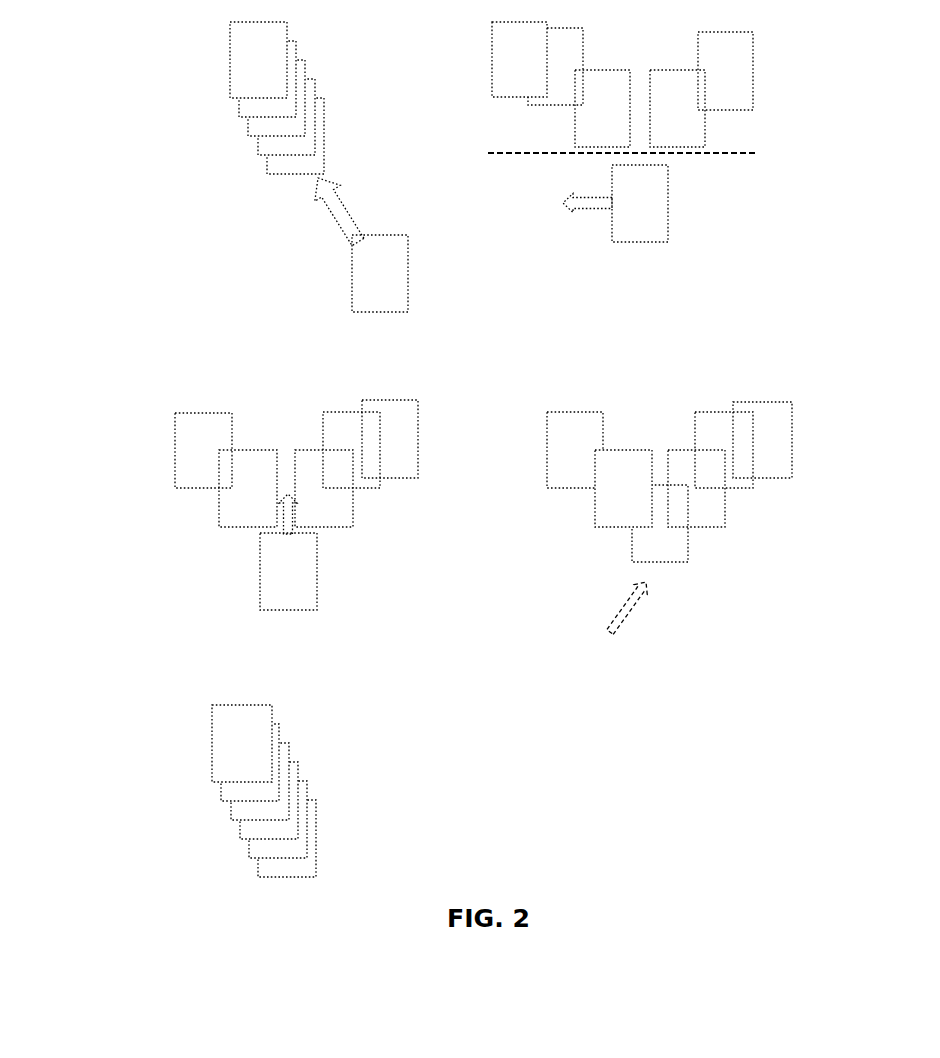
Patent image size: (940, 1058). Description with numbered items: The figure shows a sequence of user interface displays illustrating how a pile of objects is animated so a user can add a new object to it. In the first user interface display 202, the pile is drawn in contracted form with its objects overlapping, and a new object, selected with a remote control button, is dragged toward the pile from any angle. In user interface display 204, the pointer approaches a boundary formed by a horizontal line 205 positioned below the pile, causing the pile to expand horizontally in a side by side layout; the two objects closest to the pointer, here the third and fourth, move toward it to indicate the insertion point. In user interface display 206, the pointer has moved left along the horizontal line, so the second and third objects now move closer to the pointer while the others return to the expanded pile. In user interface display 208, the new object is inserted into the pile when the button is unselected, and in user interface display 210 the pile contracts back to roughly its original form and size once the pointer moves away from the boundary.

The first user interface display 202 is at (166, 117).
The user interface display 204 is at (811, 117).
The horizontal line 205 is at (733, 166).
The user interface display 206 is at (131, 487).
The user interface display 208 is at (837, 422).
The user interface display 210 is at (347, 787).